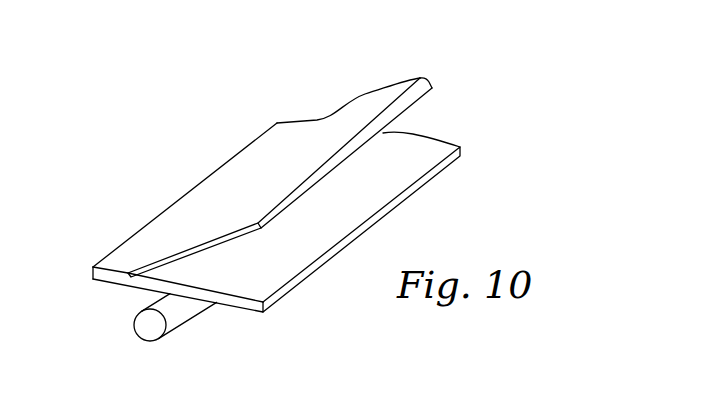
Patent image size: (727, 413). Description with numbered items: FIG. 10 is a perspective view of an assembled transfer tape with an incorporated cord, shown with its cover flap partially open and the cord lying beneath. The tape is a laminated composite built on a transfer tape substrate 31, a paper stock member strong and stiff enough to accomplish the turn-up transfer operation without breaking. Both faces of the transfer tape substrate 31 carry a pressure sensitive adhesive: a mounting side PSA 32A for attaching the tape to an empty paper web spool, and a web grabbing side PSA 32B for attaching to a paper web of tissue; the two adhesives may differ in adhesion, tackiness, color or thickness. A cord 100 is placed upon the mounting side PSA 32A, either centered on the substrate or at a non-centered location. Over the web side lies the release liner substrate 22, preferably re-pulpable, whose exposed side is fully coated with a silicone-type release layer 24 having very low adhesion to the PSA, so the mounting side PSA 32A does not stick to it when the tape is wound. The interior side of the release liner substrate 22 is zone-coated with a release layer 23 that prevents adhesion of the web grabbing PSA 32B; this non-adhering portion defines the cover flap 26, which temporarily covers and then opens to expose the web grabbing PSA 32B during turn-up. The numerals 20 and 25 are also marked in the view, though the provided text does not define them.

The conductive strip 20 is at (173, 179).
The release liner substrate 22 is at (177, 245).
The release layer or coating 23 is at (433, 97).
The release layer or coating 24 is at (341, 123).
The attached end 25 is at (105, 275).
The cover flap 26 is at (414, 112).
The transfer tape substrate 31 is at (237, 305).
The mounting side PSA 32A is at (286, 304).
The web grabbing side PSA 32B is at (362, 185).
The cord element 100 is at (142, 340).